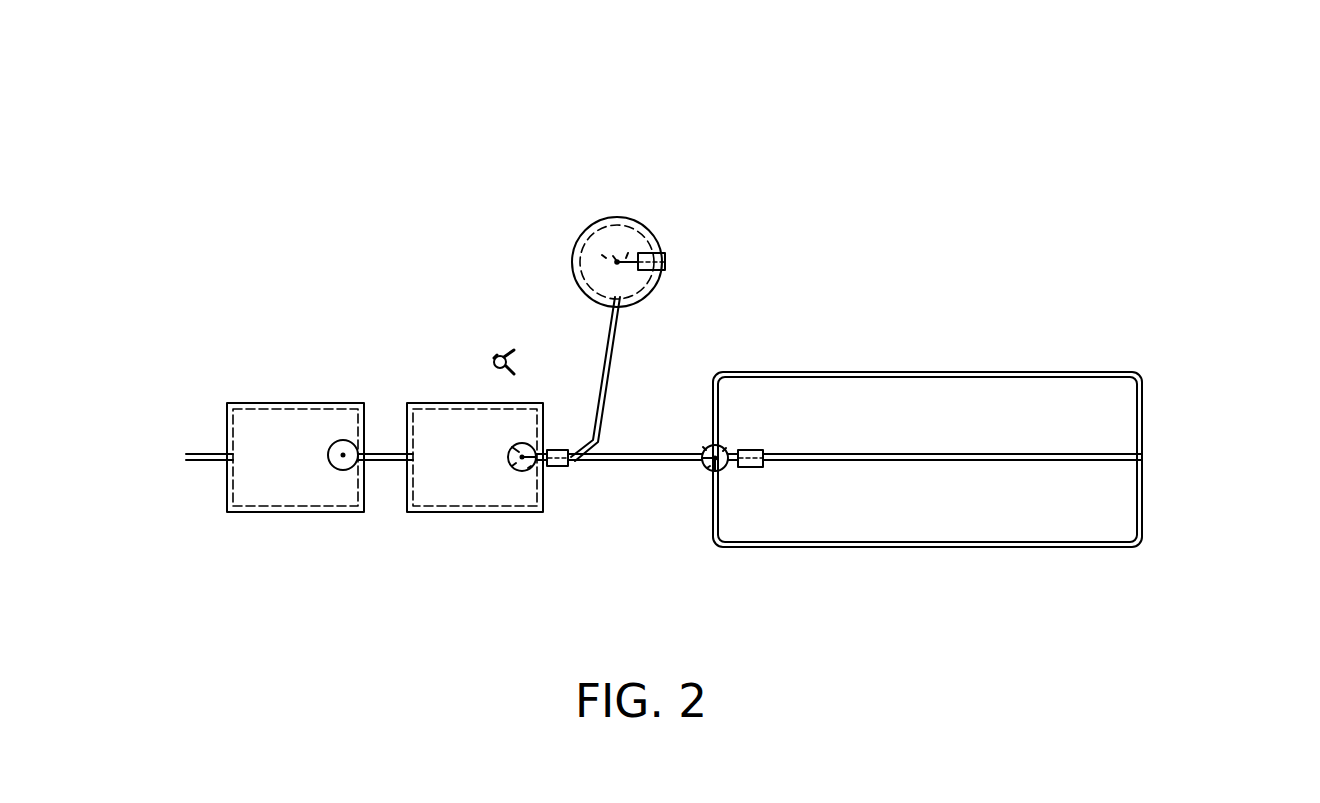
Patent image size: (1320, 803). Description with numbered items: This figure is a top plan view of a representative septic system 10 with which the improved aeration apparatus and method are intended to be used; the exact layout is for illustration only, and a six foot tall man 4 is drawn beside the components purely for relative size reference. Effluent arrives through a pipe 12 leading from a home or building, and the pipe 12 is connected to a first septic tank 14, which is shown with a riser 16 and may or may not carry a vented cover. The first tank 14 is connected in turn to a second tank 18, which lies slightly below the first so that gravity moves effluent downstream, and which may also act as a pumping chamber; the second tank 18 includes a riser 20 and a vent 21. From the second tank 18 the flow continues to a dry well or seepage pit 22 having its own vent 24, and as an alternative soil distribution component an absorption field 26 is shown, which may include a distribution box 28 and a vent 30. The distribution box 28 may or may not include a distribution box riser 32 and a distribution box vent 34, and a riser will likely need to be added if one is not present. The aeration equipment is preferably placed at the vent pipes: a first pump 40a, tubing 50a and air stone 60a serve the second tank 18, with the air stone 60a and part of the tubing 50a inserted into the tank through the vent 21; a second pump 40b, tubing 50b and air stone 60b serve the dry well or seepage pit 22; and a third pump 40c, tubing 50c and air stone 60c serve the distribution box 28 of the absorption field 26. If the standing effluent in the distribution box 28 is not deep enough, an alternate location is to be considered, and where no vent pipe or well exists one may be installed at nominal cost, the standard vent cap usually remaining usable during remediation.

The six foot tall man 4 is at (502, 340).
The septic system 10 is at (825, 240).
The pipe 12 is at (188, 450).
The first septic tank 14 is at (263, 514).
The riser 16 is at (342, 454).
The second tank 18 is at (465, 514).
The riser 20 is at (500, 443).
The vent 21 is at (515, 443).
The dry well or seepage pit 22 is at (650, 225).
The vent 24 is at (613, 253).
The absorption field 26 is at (845, 549).
The distribution box 28 is at (727, 470).
The vent 30 is at (1145, 453).
The distribution box riser 32 is at (702, 445).
The distribution box vent 34 is at (718, 446).
The first pump 40a is at (560, 468).
The second pump 40b is at (662, 250).
The third pump 40c is at (752, 450).
The tubing 50a is at (530, 473).
The tubing 50b is at (628, 250).
The tubing 50c is at (727, 447).
The air stone 60a is at (512, 469).
The air stone 60b is at (602, 252).
The air stone 60c is at (707, 471).